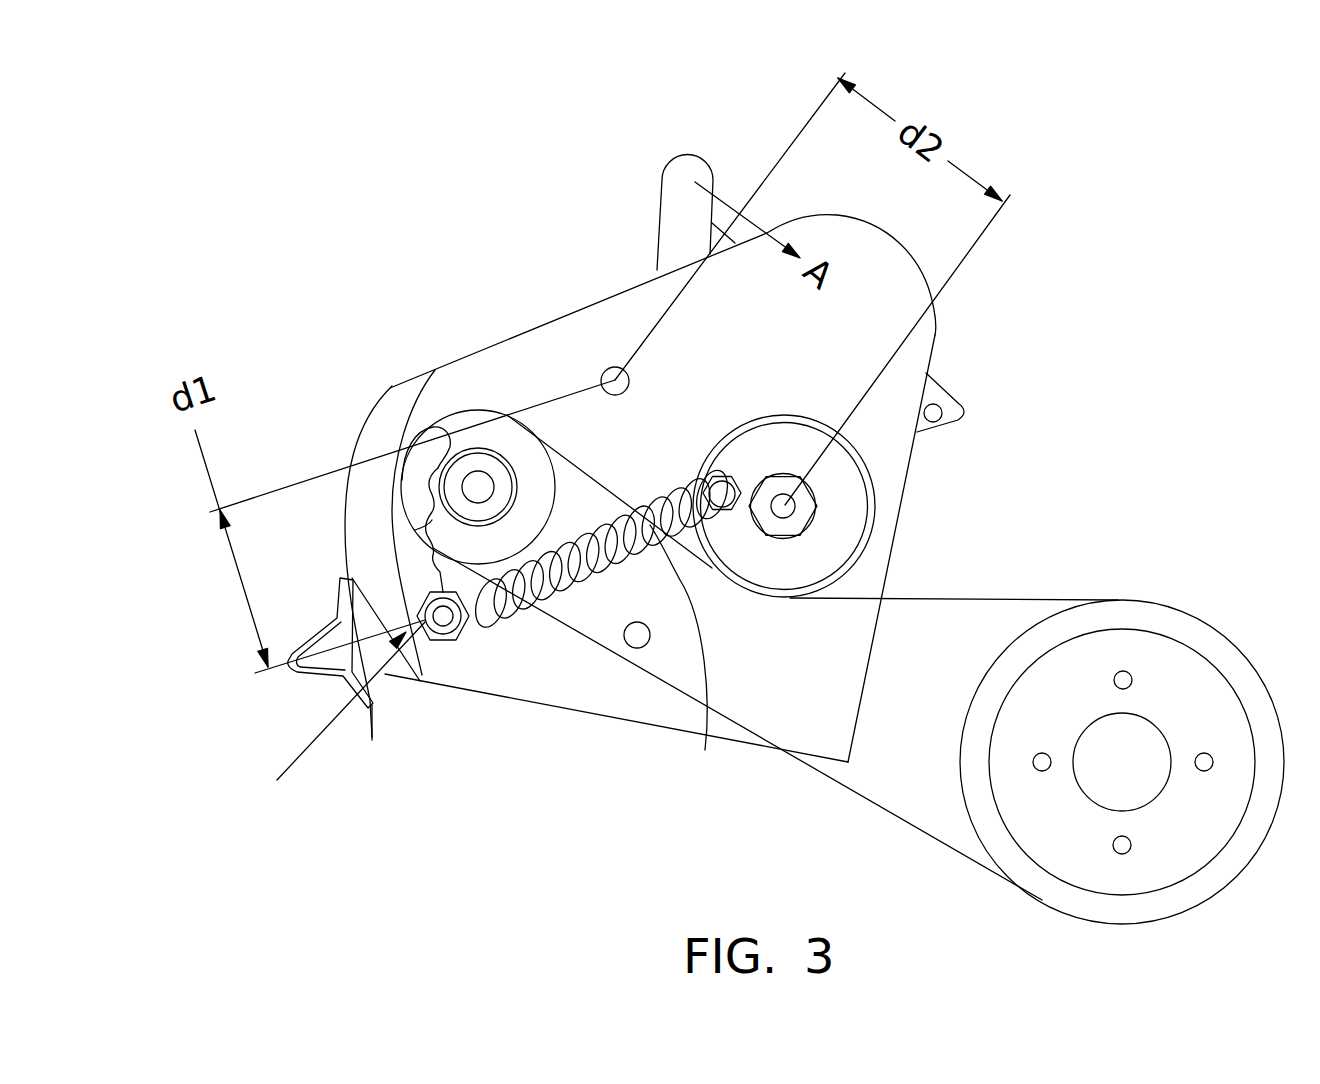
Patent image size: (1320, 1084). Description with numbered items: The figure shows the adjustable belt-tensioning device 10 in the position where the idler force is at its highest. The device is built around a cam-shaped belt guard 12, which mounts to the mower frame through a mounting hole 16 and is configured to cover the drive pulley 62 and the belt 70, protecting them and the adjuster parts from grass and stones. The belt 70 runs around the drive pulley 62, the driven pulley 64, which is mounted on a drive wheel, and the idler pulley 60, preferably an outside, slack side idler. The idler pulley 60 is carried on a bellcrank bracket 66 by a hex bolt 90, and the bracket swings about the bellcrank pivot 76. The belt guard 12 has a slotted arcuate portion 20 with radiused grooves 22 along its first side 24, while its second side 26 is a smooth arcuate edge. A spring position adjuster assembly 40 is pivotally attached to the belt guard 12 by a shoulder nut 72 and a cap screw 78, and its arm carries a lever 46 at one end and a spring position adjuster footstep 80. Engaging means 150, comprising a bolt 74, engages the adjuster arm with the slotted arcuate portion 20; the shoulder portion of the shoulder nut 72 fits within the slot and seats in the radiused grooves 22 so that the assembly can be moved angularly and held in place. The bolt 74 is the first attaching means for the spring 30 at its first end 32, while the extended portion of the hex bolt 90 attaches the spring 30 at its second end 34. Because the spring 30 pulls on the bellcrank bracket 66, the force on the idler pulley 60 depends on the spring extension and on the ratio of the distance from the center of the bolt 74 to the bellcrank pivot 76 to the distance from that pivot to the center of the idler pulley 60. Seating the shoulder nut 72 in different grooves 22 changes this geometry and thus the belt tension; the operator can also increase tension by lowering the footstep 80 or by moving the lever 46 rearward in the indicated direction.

The adjustable belt-tensioning device 10 is at (460, 222).
The belt guard 12 is at (500, 362).
The mounting hole 16 is at (632, 640).
The slotted arcuate portion 20 is at (390, 388).
The radiused grooves 22 is at (427, 550).
The first side 24 is at (415, 530).
The second side 26 is at (393, 503).
The spring 30 is at (689, 656).
The first end 32 is at (421, 680).
The second end 34 is at (805, 520).
The spring position adjuster assembly 40 is at (535, 646).
The lever 46 is at (695, 178).
The idler pulley 60 is at (847, 533).
The drive pulley 62 is at (460, 423).
The driven pulley 64 is at (1145, 622).
The bellcrank bracket 66 is at (933, 398).
The belt 70 is at (873, 808).
The shoulder nut 72 is at (716, 494).
The bolt 74 is at (368, 742).
The bellcrank pivot 76 is at (602, 395).
The cap screw 78 is at (786, 503).
The spring position adjuster footstep 80 is at (313, 673).
The hex bolt 90 is at (788, 504).
The engaging means 150 is at (331, 724).